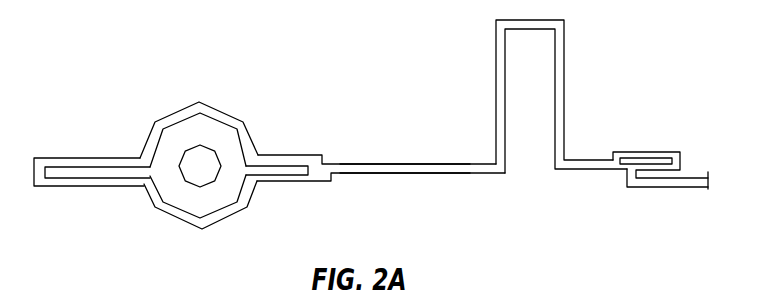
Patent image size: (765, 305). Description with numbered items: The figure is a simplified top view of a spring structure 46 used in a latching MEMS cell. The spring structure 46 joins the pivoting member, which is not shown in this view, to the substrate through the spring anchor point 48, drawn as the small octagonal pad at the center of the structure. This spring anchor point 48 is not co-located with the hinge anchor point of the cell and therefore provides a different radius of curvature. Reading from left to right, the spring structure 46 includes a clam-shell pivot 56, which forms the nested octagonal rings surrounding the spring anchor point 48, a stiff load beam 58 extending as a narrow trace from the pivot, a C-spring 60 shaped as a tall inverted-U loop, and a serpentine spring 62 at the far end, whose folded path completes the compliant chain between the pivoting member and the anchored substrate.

The spring structure 46 is at (371, 104).
The spring anchor point 48 is at (207, 139).
The clam-shell pivot 56 is at (178, 110).
The stiff load beam 58 is at (356, 163).
The C-spring 60 is at (567, 63).
The serpentine spring 62 is at (643, 149).